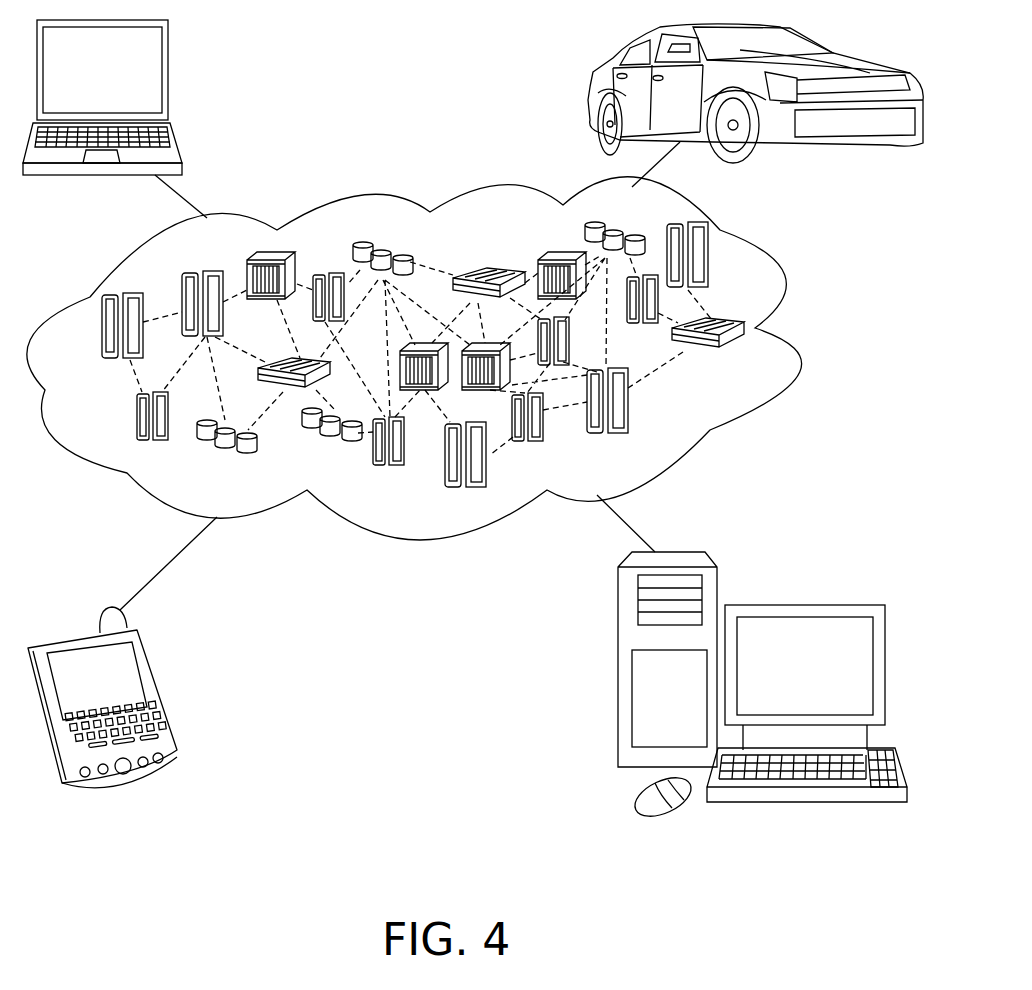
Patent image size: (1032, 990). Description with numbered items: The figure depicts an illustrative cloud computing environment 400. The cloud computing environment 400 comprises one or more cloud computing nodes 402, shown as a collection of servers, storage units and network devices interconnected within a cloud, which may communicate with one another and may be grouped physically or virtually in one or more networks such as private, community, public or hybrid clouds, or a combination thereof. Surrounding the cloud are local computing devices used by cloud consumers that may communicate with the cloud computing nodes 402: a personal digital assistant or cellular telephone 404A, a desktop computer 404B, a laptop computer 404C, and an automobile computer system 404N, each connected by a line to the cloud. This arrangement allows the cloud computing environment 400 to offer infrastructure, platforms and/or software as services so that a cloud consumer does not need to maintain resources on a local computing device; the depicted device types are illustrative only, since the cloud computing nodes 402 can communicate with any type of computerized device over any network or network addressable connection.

The cloud computing environment 400 is at (447, 358).
The cloud computing nodes 402 is at (752, 366).
The personal digital assistant (PDA) or cellular telephone 404A is at (148, 665).
The desktop computer 404B is at (790, 603).
The laptop computer 404C is at (168, 58).
The automobile computer system 404N is at (595, 94).